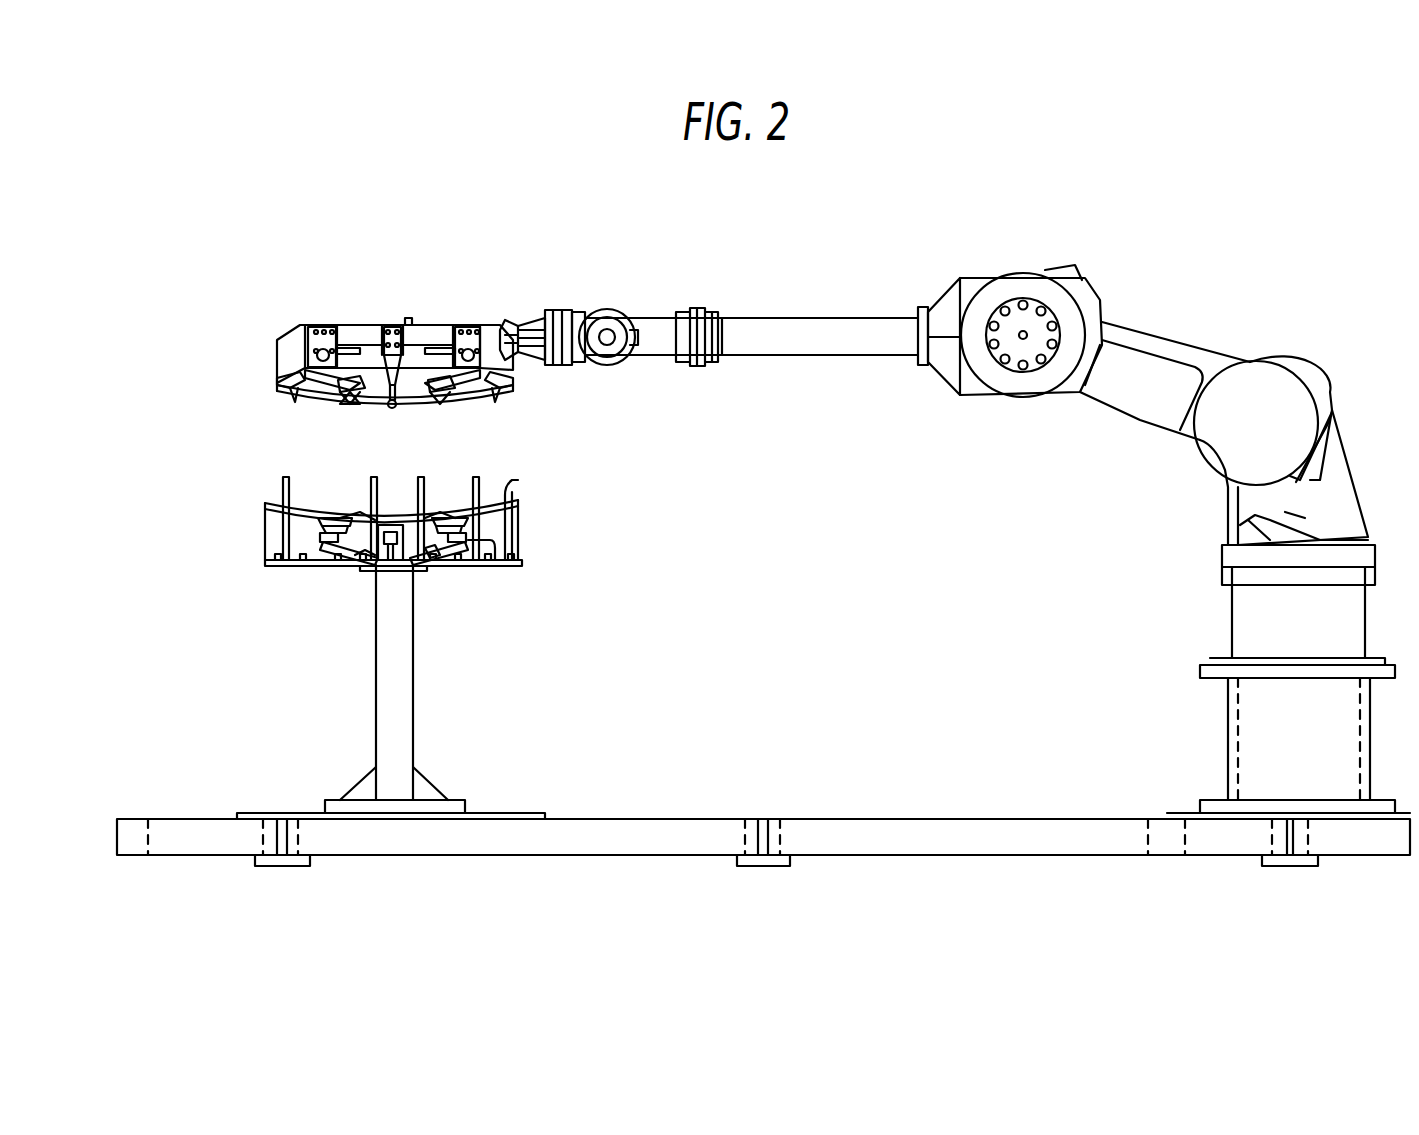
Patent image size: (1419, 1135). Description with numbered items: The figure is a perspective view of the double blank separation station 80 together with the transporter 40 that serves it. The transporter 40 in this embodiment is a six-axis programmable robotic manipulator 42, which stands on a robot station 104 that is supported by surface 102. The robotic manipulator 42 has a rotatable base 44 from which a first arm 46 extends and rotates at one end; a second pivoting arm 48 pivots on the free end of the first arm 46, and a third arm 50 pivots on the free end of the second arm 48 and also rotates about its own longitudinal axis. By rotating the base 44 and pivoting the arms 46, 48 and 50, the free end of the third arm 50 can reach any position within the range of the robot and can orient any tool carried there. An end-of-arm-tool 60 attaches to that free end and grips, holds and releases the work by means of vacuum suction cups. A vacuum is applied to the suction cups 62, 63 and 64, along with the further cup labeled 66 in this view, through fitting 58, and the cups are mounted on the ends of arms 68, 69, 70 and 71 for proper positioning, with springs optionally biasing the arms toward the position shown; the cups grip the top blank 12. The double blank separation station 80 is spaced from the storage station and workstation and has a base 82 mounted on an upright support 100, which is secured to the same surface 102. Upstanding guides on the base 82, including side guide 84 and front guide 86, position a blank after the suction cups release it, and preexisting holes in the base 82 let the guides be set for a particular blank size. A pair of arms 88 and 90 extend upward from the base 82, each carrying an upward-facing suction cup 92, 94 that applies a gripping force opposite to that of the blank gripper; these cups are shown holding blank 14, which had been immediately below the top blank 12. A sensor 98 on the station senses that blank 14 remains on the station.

The top blank 12 is at (410, 405).
The blank 14 is at (330, 520).
The transporter 40 is at (1153, 233).
The six-axis programmable robotic manipulator 42 is at (1165, 480).
The rotatable base 44 is at (1218, 515).
The first arm 46 is at (1197, 322).
The second pivoting arm 48 is at (818, 318).
The third arm 50 is at (646, 312).
The fitting 58 is at (483, 340).
The end-of-arm-tool (EOAT) 60 is at (232, 311).
The suction cup 62 is at (280, 392).
The suction cup 63 is at (343, 405).
The suction cup 64 is at (438, 405).
The clamp 66 is at (495, 400).
The arm 68 is at (243, 327).
The arm 69 is at (330, 330).
The arm 70 is at (432, 330).
The arm 71 is at (500, 335).
The double blank separation station 80 is at (316, 598).
The base 82 is at (490, 565).
The side guide 84 is at (515, 505).
The front guide 86 is at (450, 565).
The arm 88 is at (338, 565).
The arm 90 is at (418, 565).
The suction cup 92 is at (325, 530).
The suction cup 94 is at (432, 520).
The sensor 98 is at (392, 525).
The upright support 100 is at (413, 720).
The surface 102 is at (692, 819).
The robot station 104 is at (1232, 628).